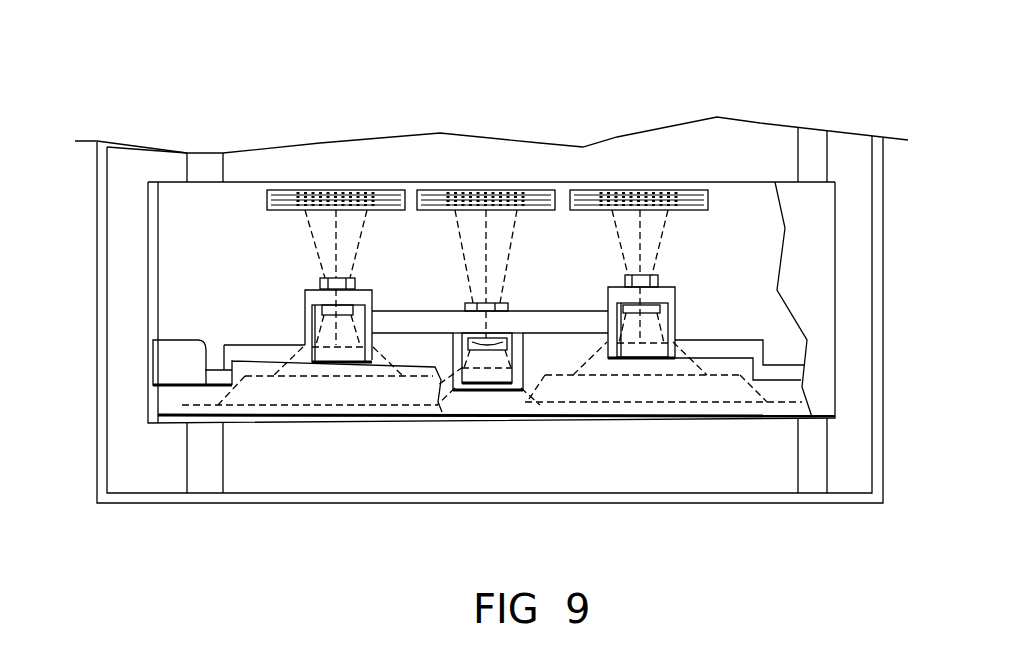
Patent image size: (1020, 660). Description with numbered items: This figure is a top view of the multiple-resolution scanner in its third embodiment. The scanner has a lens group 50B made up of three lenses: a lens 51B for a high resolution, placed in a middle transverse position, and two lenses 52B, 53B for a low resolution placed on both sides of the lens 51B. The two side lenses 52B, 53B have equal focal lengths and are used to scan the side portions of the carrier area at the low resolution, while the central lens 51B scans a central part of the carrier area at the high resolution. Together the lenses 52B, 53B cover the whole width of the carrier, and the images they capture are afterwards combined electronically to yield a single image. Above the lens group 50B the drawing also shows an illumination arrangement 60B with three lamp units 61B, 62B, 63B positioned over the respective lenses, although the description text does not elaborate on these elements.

The lens group 50B is at (283, 312).
The lens for a high resolution 51B is at (468, 308).
The lens for a low resolution 52B is at (660, 278).
The lens for a low resolution 53B is at (320, 283).
The illumination unit 60B is at (250, 202).
The light source lamp 61B is at (447, 185).
The light source lamp 62B is at (643, 185).
The light source lamp 63B is at (317, 192).